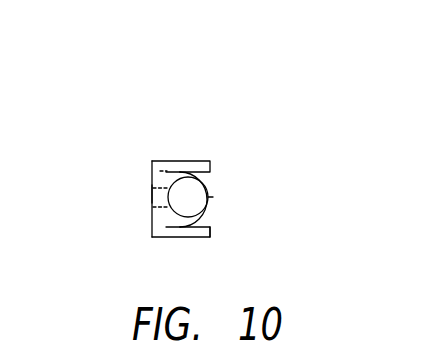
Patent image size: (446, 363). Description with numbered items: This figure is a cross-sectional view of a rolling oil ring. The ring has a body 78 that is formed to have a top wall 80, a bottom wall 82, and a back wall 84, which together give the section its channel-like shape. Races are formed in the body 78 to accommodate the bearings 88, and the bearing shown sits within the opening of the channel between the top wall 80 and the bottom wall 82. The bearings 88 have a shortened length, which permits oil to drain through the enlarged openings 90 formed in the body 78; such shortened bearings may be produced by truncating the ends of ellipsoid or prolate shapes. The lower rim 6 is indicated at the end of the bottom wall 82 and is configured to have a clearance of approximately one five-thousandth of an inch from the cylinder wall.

The body 78 is at (151, 160).
The top wall 80 is at (190, 162).
The bottom wall 82 is at (175, 232).
The back wall 84 is at (152, 177).
The bearings 88 is at (199, 194).
The lower rim 6 is at (210, 232).
The enlarged openings 90 is at (150, 193).